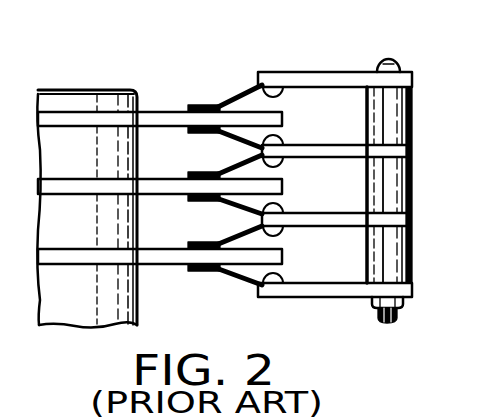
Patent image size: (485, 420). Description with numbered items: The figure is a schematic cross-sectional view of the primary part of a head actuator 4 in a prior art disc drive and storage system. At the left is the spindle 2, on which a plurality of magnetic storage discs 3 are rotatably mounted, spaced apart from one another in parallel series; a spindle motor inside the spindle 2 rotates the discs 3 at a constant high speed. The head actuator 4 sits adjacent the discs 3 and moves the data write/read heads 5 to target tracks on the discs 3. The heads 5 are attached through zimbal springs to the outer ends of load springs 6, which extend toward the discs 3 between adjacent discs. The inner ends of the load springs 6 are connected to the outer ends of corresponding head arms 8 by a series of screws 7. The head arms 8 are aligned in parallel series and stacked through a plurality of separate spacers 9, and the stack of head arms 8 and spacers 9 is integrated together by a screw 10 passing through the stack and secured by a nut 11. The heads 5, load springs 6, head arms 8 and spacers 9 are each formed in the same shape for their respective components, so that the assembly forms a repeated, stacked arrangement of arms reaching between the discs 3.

The spindle 2 is at (50, 101).
The magnetic storage discs 3 is at (107, 118).
The head actuator 4 is at (318, 302).
The data write/read heads 5 is at (197, 105).
The load springs 6 is at (238, 98).
The screws 7 is at (298, 96).
The head arms 8 is at (348, 80).
The spacers 9 is at (397, 125).
The screw 10 is at (400, 70).
The nut 11 is at (403, 307).